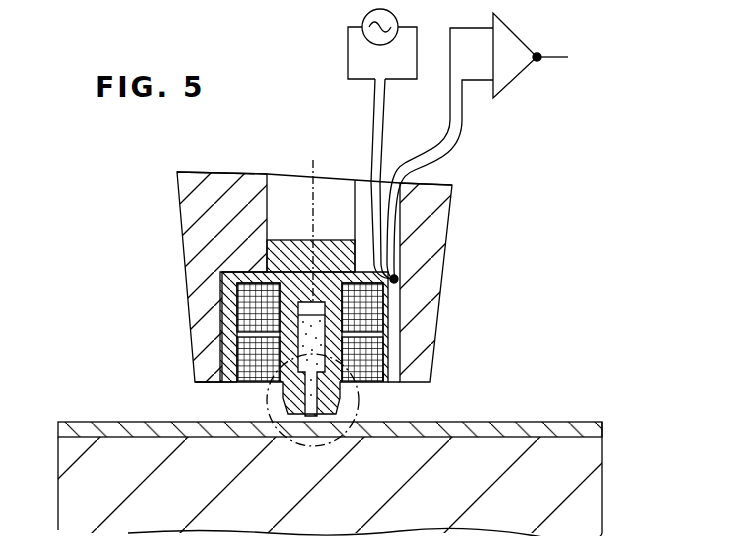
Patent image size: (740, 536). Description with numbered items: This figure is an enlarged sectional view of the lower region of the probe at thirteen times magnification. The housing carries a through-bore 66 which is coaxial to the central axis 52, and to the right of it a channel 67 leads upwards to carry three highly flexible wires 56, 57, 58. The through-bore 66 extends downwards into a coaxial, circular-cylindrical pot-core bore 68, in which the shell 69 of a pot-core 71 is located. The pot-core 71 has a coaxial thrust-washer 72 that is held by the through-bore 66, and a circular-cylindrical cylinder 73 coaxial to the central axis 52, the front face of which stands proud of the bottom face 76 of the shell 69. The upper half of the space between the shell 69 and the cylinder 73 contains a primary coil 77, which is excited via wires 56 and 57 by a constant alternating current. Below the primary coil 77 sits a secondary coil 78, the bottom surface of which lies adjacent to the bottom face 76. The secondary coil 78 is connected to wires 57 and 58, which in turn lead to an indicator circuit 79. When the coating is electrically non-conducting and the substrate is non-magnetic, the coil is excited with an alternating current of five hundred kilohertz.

The central axis 52 is at (307, 172).
The wire 56 is at (376, 126).
The wire 57 is at (388, 120).
The wire 58 is at (438, 142).
The through-bore 66 is at (273, 203).
The channel 67 is at (398, 183).
The pot-core bore 68 is at (200, 383).
The shell 69 is at (222, 303).
The pot-core 71 is at (333, 213).
The thrust-washer 72 is at (267, 240).
The cylinder 73 is at (325, 410).
The bottom face 76 is at (224, 383).
The primary coil 77 is at (383, 310).
The secondary coil 78 is at (385, 382).
The indicator circuit 79 is at (508, 40).